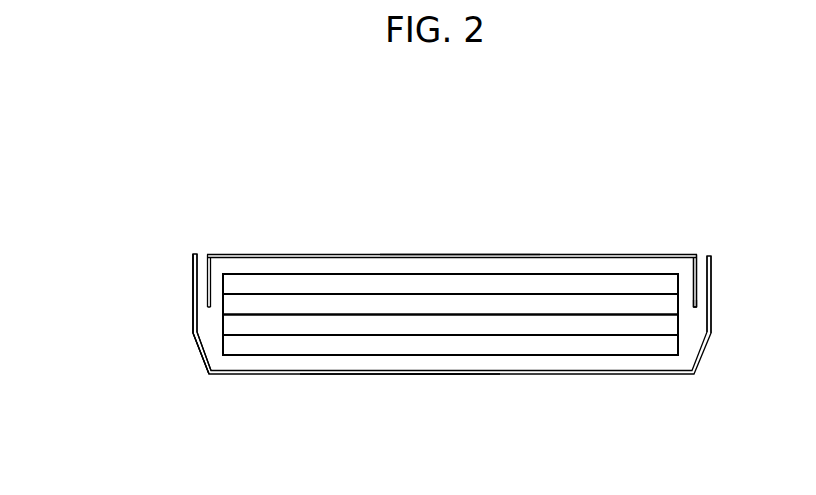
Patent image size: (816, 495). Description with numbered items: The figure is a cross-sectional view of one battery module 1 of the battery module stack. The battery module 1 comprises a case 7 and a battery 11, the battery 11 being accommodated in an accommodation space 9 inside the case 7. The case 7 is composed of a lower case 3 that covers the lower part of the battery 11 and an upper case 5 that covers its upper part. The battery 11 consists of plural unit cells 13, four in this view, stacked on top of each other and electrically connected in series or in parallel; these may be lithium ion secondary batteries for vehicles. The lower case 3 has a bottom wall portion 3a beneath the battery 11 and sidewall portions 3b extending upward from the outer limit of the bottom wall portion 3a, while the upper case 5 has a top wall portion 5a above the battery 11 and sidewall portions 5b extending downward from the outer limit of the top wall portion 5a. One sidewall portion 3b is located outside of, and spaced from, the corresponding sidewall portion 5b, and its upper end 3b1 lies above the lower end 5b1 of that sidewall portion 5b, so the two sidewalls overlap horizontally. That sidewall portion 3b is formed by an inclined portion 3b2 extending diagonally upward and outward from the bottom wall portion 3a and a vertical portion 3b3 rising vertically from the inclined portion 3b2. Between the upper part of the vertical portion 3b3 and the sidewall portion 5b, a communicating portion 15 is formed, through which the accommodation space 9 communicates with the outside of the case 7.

The battery module 1 is at (618, 216).
The lower case 3 is at (495, 376).
The bottom wall portion 3a is at (378, 376).
The sidewall portion 3b is at (92, 285).
The upper end 3b1 is at (709, 257).
The inclined portion 3b2 is at (199, 353).
The vertical portion 3b3 is at (193, 290).
The upper case 5 is at (512, 253).
The top wall portion 5a is at (455, 254).
The sidewall portion 5b is at (697, 270).
The lower end 5b1 is at (696, 309).
The case 7 is at (437, 378).
The accommodation space 9 is at (400, 268).
The battery 11 is at (255, 273).
The unit cells 13 is at (343, 308).
The communicating portion 15 is at (702, 297).